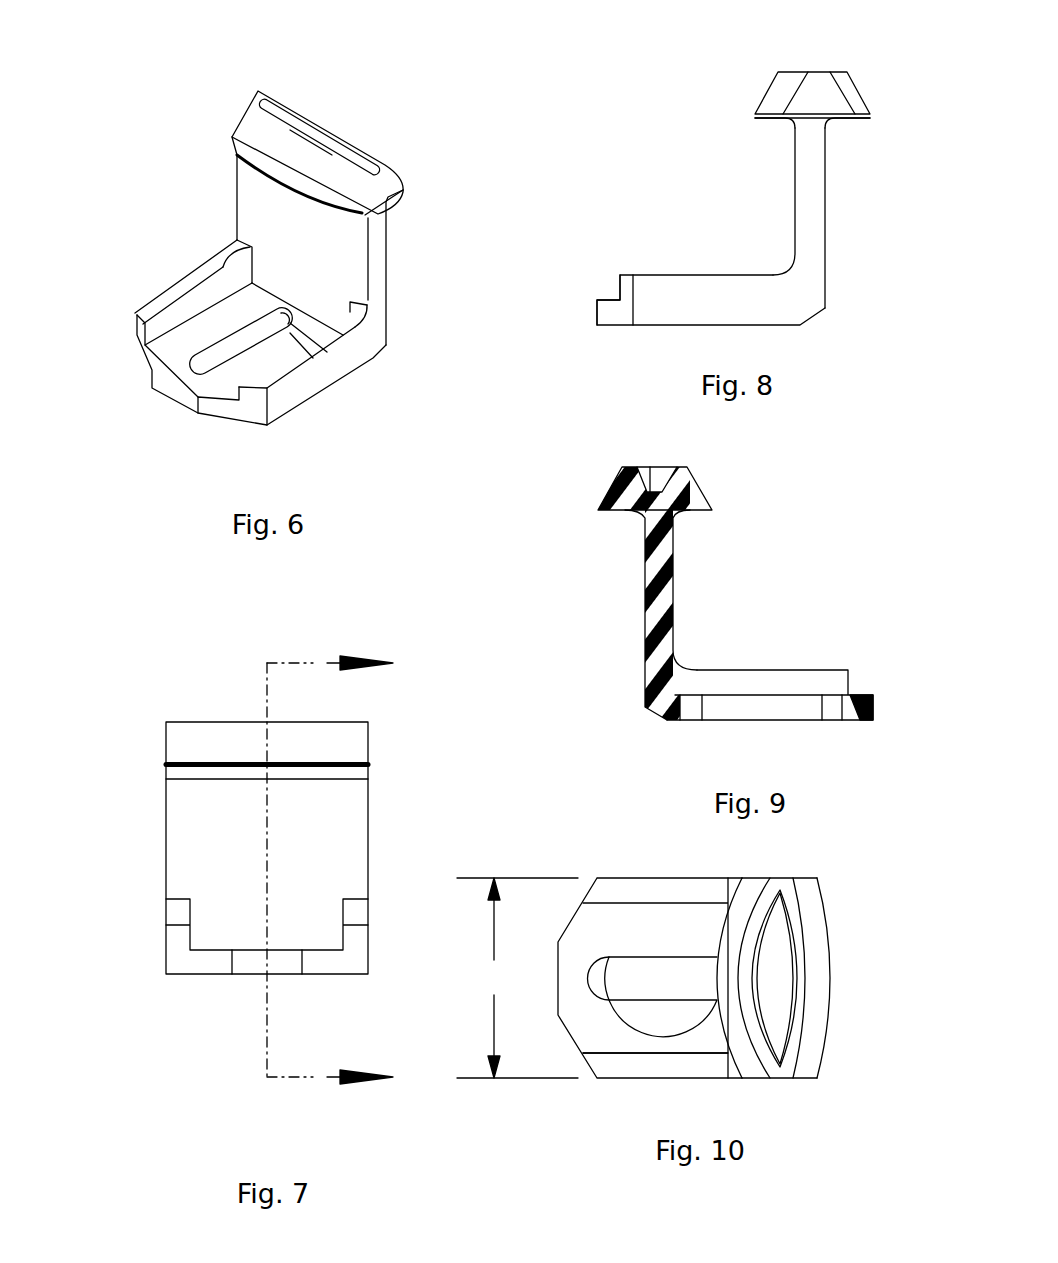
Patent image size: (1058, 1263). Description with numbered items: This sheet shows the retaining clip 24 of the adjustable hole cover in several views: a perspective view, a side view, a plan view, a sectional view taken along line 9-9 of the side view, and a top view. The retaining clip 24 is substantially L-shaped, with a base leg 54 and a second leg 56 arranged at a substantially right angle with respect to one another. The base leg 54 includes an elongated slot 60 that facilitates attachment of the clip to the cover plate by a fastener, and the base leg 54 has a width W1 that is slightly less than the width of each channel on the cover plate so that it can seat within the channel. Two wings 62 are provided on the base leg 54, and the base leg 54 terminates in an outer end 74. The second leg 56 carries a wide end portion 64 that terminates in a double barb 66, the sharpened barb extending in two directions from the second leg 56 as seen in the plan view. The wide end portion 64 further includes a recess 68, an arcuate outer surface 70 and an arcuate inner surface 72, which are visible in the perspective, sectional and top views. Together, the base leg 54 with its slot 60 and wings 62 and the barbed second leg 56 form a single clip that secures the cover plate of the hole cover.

In FIG. 8, the retaining clip 24 is at (632, 148).
In FIG. 6, the base leg 54 is at (317, 397).
In FIG. 8, the base leg 54 is at (710, 310).
In FIG. 9, the base leg 54 is at (760, 720).
In FIG. 7, the base leg 54 is at (267, 962).
In FIG. 6, the second leg 56 is at (387, 278).
In FIG. 8, the second leg 56 is at (813, 202).
In FIG. 9, the second leg 56 is at (650, 637).
In FIG. 7, the second leg 56 is at (310, 861).
In FIG. 10, the second leg 56 is at (650, 978).
In FIG. 6, the elongated slot 60 is at (222, 348).
In FIG. 6, the wings 62 is at (217, 275).
In FIG. 7, the wings 62 is at (178, 937).
In FIG. 10, the wings 62 is at (643, 1063).
In FIG. 6, the wide end portion 64 is at (330, 115).
In FIG. 8, the wide end portion 64 is at (817, 105).
In FIG. 8, the double barb 66 is at (755, 118).
In FIG. 6, the recess 68 is at (297, 128).
In FIG. 10, the recess 68 is at (770, 975).
In FIG. 9, the arcuate outer surface 70 is at (615, 487).
In FIG. 10, the arcuate outer surface 70 is at (802, 932).
In FIG. 9, the arcuate inner surface 72 is at (698, 487).
In FIG. 7, the arcuate inner surface 72 is at (343, 742).
In FIG. 10, the arcuate inner surface 72 is at (727, 975).
In FIG. 6, the outer end 74 is at (173, 392).
In FIG. 8, the outer end 74 is at (595, 312).
In FIG. 7, the section line 9- 9 is at (330, 873).
In FIG. 10, the width W1 is at (517, 978).